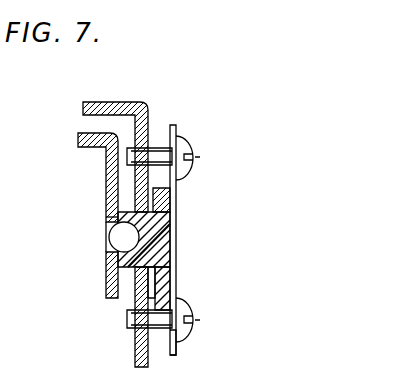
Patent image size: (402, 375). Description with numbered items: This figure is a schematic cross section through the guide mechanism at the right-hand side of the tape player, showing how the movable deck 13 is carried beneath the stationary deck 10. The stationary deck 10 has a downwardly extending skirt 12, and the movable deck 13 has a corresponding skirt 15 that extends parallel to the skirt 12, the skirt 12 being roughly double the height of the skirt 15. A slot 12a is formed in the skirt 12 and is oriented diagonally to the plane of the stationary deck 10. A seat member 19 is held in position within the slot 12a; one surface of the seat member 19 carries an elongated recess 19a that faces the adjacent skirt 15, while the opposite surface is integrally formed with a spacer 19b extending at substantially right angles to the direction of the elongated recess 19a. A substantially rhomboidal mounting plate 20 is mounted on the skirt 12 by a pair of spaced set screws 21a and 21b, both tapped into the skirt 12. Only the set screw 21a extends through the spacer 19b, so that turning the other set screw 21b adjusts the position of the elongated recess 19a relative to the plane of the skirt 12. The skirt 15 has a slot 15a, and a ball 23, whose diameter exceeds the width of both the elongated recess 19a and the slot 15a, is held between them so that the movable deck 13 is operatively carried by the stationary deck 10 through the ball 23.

The stationary deck 10 is at (110, 101).
The movable deck 13 is at (78, 138).
The skirt 15 is at (107, 290).
The slot 15a is at (108, 251).
The ball 23 is at (110, 233).
The seat member 19 is at (160, 244).
The elongated recess 19a is at (165, 232).
The spacer 19b is at (170, 356).
The skirt 12 is at (135, 350).
The slot 12a is at (160, 276).
The mounting plate 20 is at (176, 198).
The set screw 21a is at (192, 304).
The set screw 21b is at (182, 142).